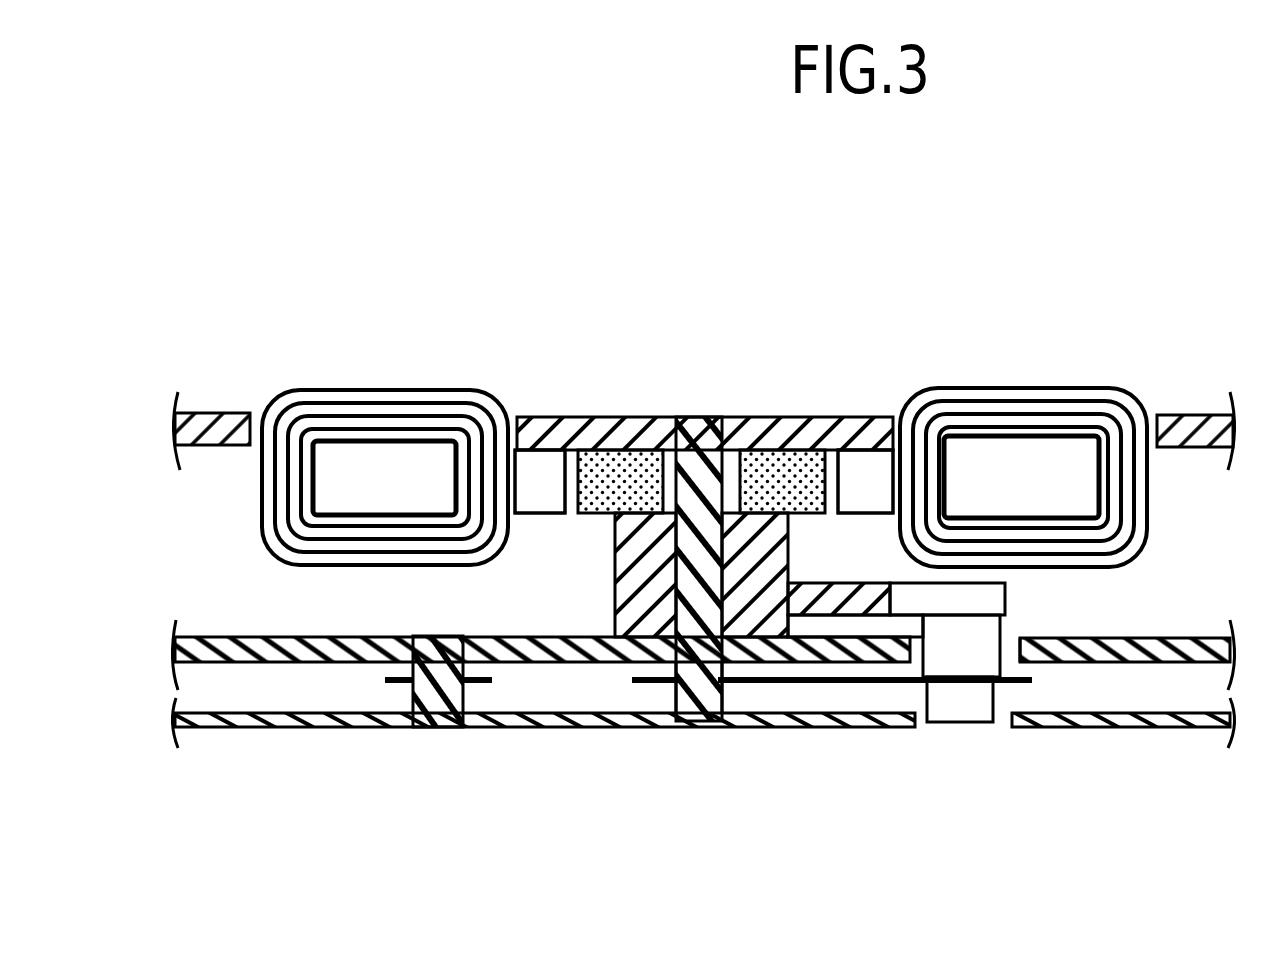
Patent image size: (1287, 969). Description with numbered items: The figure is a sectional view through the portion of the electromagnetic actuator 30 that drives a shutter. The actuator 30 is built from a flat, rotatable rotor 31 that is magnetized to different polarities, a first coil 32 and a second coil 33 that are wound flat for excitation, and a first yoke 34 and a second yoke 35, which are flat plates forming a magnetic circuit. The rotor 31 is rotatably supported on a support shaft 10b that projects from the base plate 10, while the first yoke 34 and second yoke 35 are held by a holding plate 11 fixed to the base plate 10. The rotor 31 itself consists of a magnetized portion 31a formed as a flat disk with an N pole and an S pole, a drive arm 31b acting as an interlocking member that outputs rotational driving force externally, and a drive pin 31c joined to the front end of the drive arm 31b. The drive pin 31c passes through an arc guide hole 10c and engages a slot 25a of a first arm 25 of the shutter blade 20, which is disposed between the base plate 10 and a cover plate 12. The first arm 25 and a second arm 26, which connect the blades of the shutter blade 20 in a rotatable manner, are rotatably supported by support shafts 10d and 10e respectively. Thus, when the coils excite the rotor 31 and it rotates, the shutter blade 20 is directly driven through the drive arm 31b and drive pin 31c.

The base plate 10 is at (1190, 638).
The support shaft 10b is at (703, 457).
The arc guide hole 10c is at (1013, 641).
The support shaft 10d is at (700, 716).
The support shaft 10e is at (433, 726).
The holding plate 11 is at (1192, 418).
The cover plate 12 is at (1196, 728).
The shutter blade 20 is at (812, 683).
The first arm 25 is at (640, 685).
The slot 25a is at (993, 688).
The second arm 26 is at (393, 688).
The electromagnetic actuator 30 is at (809, 352).
The rotor 31 is at (767, 467).
The magnetized portion 31a is at (607, 466).
The drive arm 31b is at (893, 583).
The drive pin 31c is at (962, 665).
The first coil 32 is at (1102, 400).
The second coil 33 is at (433, 392).
The first yoke 34 is at (343, 452).
The second yoke 35 is at (704, 481).